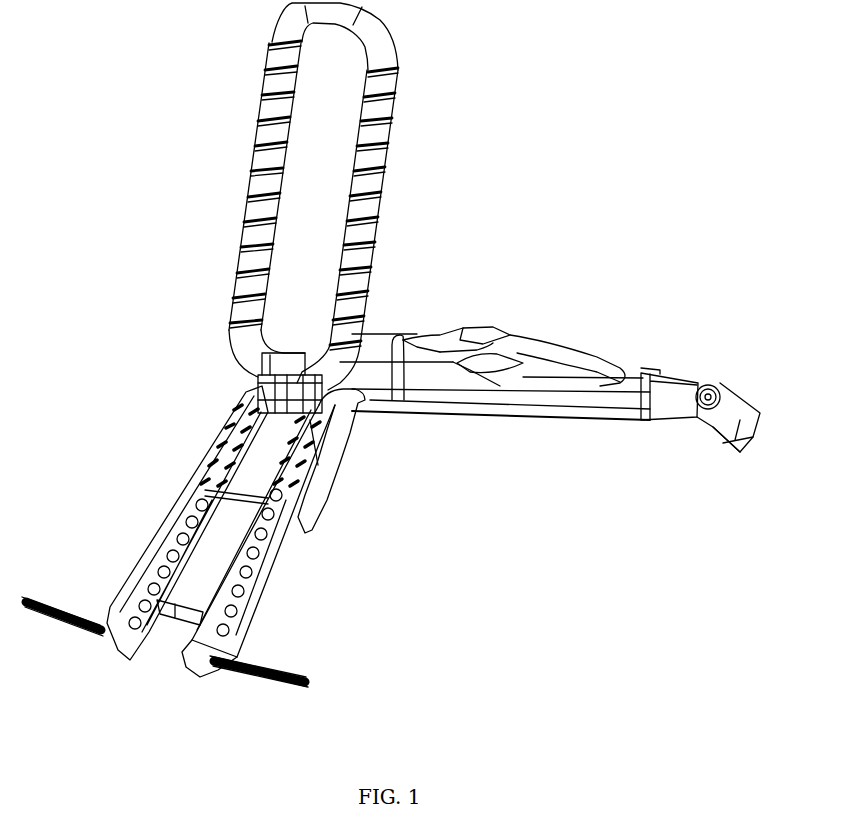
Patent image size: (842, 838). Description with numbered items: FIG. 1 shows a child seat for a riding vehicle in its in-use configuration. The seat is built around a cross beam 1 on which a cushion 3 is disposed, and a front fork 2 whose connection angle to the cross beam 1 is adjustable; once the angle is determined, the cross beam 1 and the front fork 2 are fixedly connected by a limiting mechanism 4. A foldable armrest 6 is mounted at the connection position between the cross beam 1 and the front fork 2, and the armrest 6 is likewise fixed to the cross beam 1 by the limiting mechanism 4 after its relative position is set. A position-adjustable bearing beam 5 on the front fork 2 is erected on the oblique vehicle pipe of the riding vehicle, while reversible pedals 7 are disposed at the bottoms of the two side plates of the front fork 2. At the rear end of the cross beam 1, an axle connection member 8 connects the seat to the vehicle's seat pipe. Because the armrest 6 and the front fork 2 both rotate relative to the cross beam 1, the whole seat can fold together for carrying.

The cross beam 1 is at (407, 408).
The front fork 2 is at (203, 500).
The cushion 3 is at (413, 360).
The limiting mechanism 4 is at (256, 378).
The bearing beam 5 is at (153, 603).
The armrest 6 is at (376, 141).
The pedals 7 is at (273, 668).
The axle connection member 8 is at (713, 393).